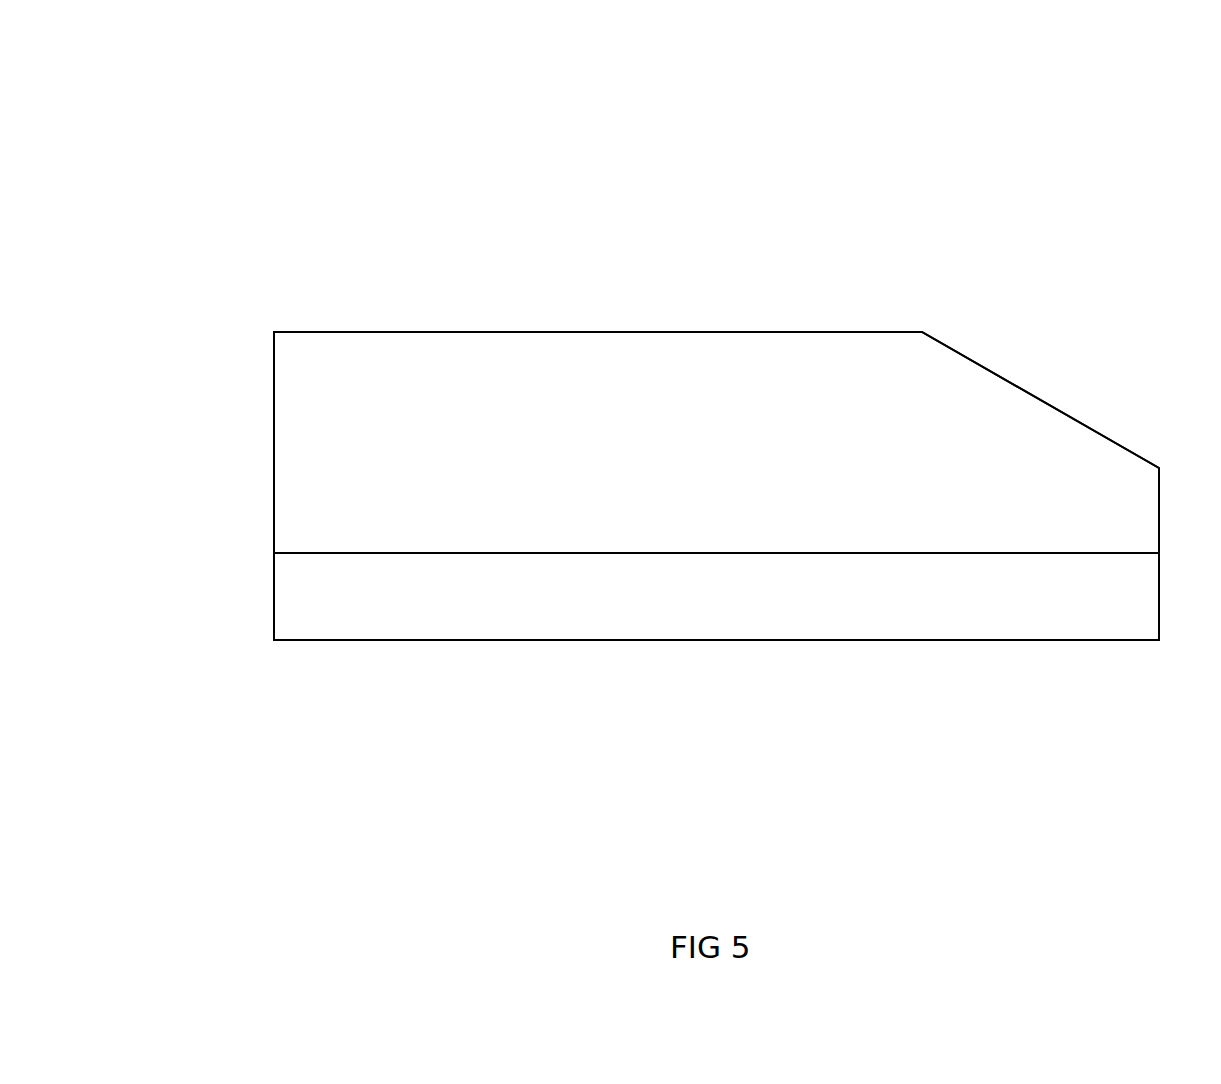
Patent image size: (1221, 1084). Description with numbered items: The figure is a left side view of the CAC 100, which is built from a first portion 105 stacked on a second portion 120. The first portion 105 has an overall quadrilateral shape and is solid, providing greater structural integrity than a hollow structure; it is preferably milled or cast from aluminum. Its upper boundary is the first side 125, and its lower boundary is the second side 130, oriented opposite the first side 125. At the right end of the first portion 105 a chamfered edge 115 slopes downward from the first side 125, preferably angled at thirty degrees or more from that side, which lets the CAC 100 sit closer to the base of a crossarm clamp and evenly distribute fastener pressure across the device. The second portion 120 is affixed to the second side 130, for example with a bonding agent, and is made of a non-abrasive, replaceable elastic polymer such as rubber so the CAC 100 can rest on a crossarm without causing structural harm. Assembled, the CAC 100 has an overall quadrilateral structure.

The CAC 100 is at (685, 342).
The first portion 105 is at (338, 371).
The second portion 120 is at (330, 588).
The first side 125 is at (730, 320).
The chamfered edge 115 is at (1029, 378).
The second side 130 is at (734, 566).